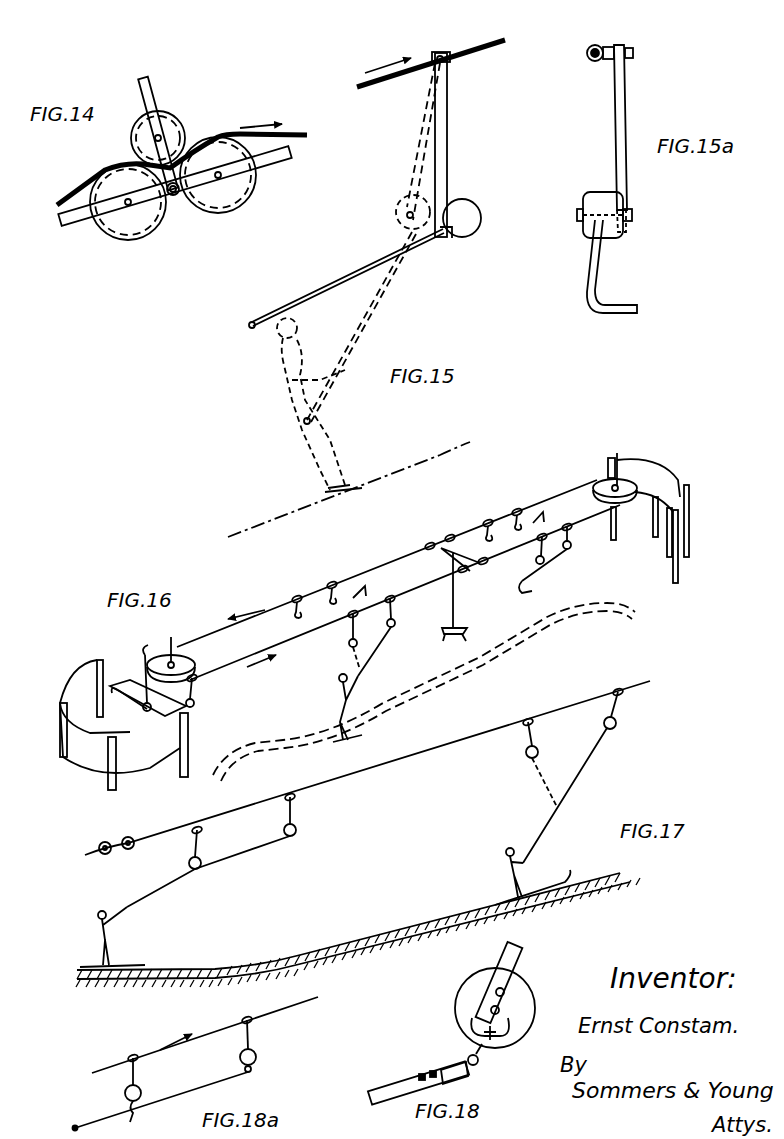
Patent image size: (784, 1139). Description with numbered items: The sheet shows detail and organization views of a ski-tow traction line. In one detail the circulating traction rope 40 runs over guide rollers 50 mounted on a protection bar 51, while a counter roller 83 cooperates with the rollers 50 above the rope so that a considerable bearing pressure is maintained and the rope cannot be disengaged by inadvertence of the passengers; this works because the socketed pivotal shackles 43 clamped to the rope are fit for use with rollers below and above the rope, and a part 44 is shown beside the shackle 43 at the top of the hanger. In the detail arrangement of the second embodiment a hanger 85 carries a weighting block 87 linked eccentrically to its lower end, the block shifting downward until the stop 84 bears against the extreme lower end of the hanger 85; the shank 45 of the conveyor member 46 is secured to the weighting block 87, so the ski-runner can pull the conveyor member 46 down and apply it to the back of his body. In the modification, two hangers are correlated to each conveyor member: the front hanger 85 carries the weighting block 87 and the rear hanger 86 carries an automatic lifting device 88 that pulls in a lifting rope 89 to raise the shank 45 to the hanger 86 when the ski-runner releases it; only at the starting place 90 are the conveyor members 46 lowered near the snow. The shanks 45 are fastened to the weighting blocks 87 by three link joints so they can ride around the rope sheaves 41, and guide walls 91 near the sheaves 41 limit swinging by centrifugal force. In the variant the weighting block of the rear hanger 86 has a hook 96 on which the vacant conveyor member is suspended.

In FIG. 14, the traction rope 40 is at (183, 157).
In FIG. 15, the traction rope 40 is at (392, 80).
In FIG. 15A, the traction rope 40 is at (591, 62).
In FIG. 16, the traction rope 40 is at (262, 606).
In FIG. 18A, the traction rope 40 is at (210, 1032).
In FIG. 16, the rope sheave 41 is at (187, 666).
In FIG. 15, the pivotal shackle 43 is at (449, 55).
In FIG. 15A, the pivotal shackle 43 is at (587, 56).
In FIG. 15A, the bolt 44 is at (634, 52).
In FIG. 15, the shank 45 is at (357, 270).
In FIG. 15A, the shank 45 is at (598, 268).
In FIG. 16, the shank 45 is at (373, 663).
In FIG. 17, the shank 45 is at (226, 866).
In FIG. 18A, the shank 45 is at (168, 1105).
In FIG. 18, the shank 45 is at (418, 1081).
In FIG. 15, the conveyor member 46 is at (250, 328).
In FIG. 15A, the conveyor member 46 is at (606, 307).
In FIG. 16, the conveyor member 46 is at (522, 590).
In FIG. 17, the conveyor member 46 is at (127, 907).
In FIG. 18A, the conveyor member 46 is at (68, 1114).
In FIG. 14, the roller 50 is at (118, 237).
In FIG. 14, the protection bar 51 is at (277, 166).
In FIG. 14, the counter roller 83 is at (184, 113).
In FIG. 15, the stop 84 is at (403, 208).
In FIG. 15A, the stop 84 is at (622, 232).
In FIG. 15, the hanger 85 is at (447, 139).
In FIG. 15A, the hanger 85 is at (615, 138).
In FIG. 16, the hanger 85 is at (394, 605).
In FIG. 17, the hanger 85 is at (291, 812).
In FIG. 18A, the hanger 85 is at (250, 1035).
In FIG. 18, the hanger 85 is at (514, 961).
In FIG. 16, the rear hanger 86 is at (356, 623).
In FIG. 17, the rear hanger 86 is at (199, 841).
In FIG. 18A, the rear hanger 86 is at (135, 1071).
In FIG. 15, the weighting block 87 is at (468, 201).
In FIG. 15A, the weighting block 87 is at (583, 200).
In FIG. 16, the weighting block 87 is at (395, 626).
In FIG. 17, the weighting block 87 is at (297, 834).
In FIG. 18, the weighting block 87 is at (458, 997).
In FIG. 16, the automatic lifting device 88 is at (349, 643).
In FIG. 17, the automatic lifting device 88 is at (189, 866).
In FIG. 16, the lifting rope 89 is at (360, 668).
In FIG. 17, the lifting rope 89 is at (543, 785).
In FIG. 16, the starting place 90 is at (424, 692).
In FIG. 16, the guide wall 91 is at (663, 478).
In FIG. 18A, the hook 96 is at (133, 1120).